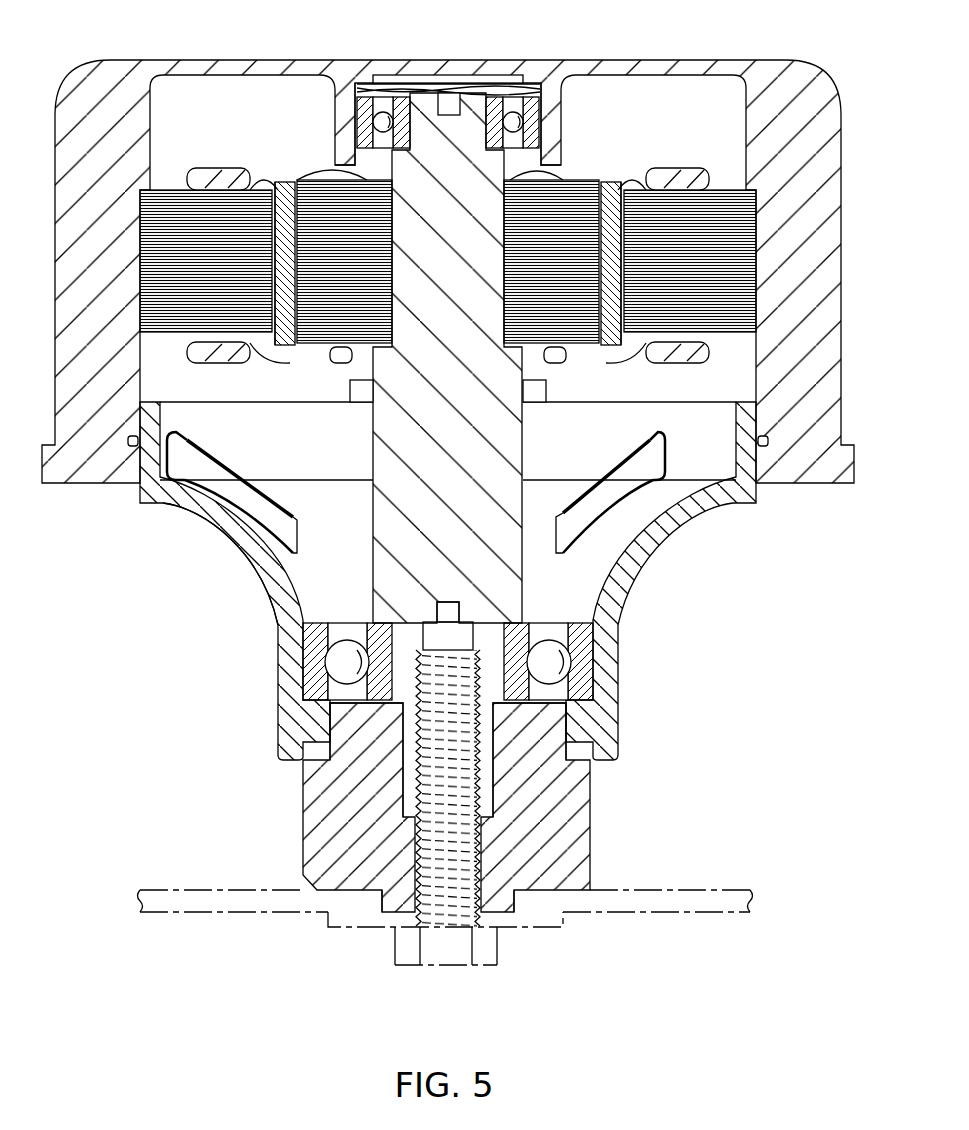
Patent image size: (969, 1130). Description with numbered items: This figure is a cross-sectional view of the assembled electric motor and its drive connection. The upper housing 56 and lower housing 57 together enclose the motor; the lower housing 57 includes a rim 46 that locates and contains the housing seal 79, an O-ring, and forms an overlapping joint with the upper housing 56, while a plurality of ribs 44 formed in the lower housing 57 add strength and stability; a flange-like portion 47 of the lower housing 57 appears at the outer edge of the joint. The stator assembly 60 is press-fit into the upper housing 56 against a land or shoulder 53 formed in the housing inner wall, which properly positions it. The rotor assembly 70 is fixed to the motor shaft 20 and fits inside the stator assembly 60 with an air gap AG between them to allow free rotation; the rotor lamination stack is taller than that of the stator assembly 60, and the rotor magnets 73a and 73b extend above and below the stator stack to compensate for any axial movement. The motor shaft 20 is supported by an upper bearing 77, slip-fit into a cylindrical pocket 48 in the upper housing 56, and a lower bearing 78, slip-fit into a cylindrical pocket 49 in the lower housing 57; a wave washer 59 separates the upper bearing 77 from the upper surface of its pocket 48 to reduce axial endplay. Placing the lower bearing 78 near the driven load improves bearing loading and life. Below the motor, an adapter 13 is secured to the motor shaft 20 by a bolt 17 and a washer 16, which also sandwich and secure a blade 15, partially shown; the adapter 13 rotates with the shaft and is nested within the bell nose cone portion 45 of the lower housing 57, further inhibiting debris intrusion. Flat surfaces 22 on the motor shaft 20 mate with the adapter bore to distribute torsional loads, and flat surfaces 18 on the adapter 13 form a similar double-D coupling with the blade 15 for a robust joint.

The adapter 13 is at (303, 850).
The blade 15 is at (217, 913).
The washer 16 is at (337, 928).
The screw or bolt 17 is at (445, 966).
The flat surfaces of adapter 18 is at (375, 902).
The motor shaft 20 is at (372, 523).
The flat surfaces of motor shaft 22 is at (402, 704).
The ribs 44 is at (210, 452).
The bell nose cone portion 45 is at (243, 538).
The rim 46 is at (147, 402).
The right bracket flange 47 is at (810, 483).
The cylindrical pocket 48 is at (532, 105).
The cylindrical pocket 49 is at (580, 690).
The land or shoulder 53 is at (740, 202).
The upper housing 56 is at (134, 60).
The lower housing 57 is at (140, 503).
The wave washer 59 is at (367, 87).
The stator assembly 60 is at (186, 148).
The rotor assembly 70 is at (311, 148).
The rotor magnet 73a is at (287, 183).
The rotor magnet 73b is at (615, 185).
The upper bearing 77 is at (337, 125).
The lower bearing 78 is at (279, 667).
The housing seal 79 is at (135, 443).
The air gap AG is at (274, 180).